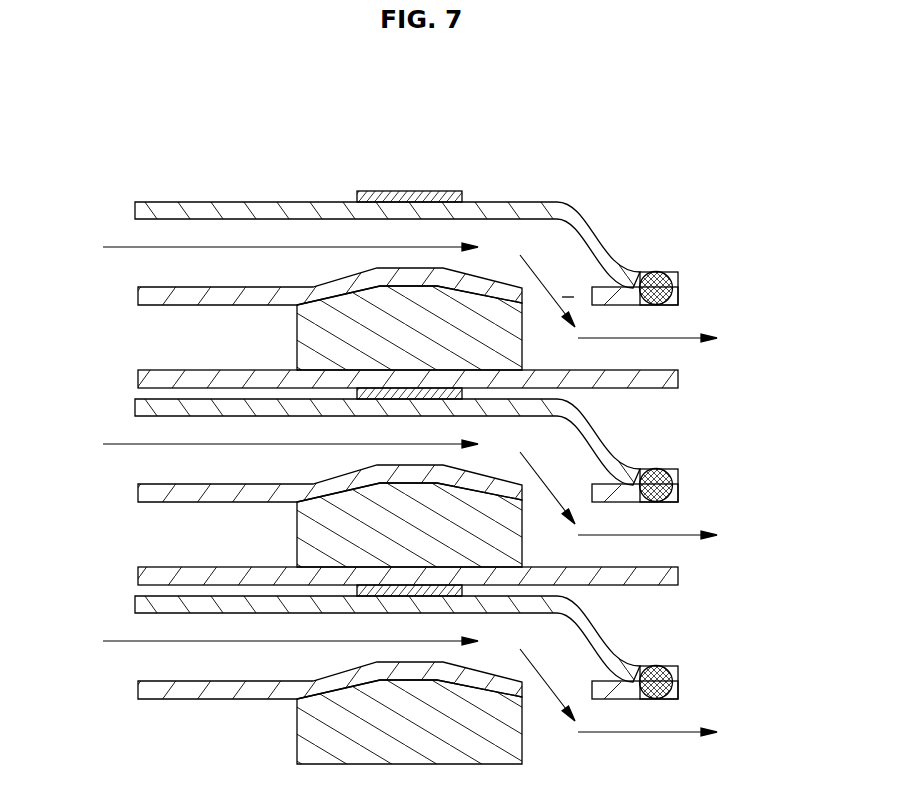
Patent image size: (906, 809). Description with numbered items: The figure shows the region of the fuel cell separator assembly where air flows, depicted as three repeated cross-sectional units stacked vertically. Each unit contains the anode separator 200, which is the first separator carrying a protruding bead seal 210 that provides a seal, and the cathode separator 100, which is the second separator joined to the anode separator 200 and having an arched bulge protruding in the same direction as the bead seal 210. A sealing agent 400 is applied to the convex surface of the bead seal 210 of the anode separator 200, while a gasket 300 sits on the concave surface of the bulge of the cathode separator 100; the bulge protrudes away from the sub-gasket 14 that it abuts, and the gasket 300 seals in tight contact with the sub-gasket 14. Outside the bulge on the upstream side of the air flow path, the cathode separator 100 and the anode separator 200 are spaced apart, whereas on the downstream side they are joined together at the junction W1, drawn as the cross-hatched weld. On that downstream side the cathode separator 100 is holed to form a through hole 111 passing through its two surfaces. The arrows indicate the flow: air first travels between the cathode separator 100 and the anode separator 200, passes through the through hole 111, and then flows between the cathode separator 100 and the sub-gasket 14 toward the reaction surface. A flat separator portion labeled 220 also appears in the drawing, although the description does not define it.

The sub-gasket 14 is at (670, 378).
The second separator 100 is at (680, 297).
The through hole 111 is at (568, 297).
The first separator 200 is at (680, 282).
The bead seal 210 is at (597, 240).
The flat portion of second member 220 is at (265, 210).
The gasket 300 is at (327, 340).
The sealing agent 400 is at (407, 198).
The junction W1 is at (655, 275).